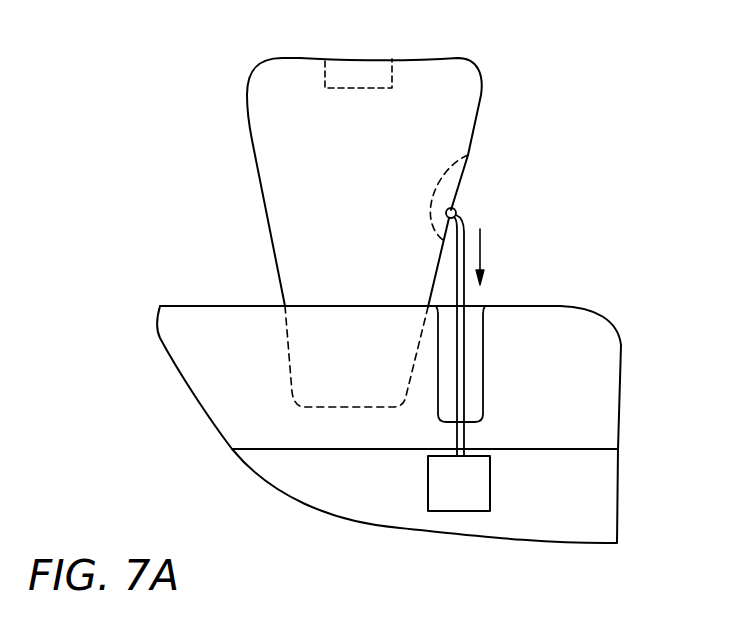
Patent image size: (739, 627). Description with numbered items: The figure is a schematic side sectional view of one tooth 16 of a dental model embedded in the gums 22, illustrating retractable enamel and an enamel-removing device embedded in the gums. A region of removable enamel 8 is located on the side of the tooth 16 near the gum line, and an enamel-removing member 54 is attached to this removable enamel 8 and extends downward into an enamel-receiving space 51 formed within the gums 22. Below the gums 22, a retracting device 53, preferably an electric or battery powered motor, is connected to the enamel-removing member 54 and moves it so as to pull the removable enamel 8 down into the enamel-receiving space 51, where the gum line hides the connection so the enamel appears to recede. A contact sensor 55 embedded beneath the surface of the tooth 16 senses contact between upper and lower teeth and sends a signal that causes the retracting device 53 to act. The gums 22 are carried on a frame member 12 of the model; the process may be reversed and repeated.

The removable enamel 8 is at (444, 190).
The frame member 12 is at (607, 494).
The tooth 16 is at (409, 93).
The gums 22 is at (600, 397).
The enamel-receiving space 51 is at (475, 347).
The retracting device 53 is at (452, 502).
The enamel-removing member 54 is at (465, 315).
The contact sensor 55 is at (340, 62).